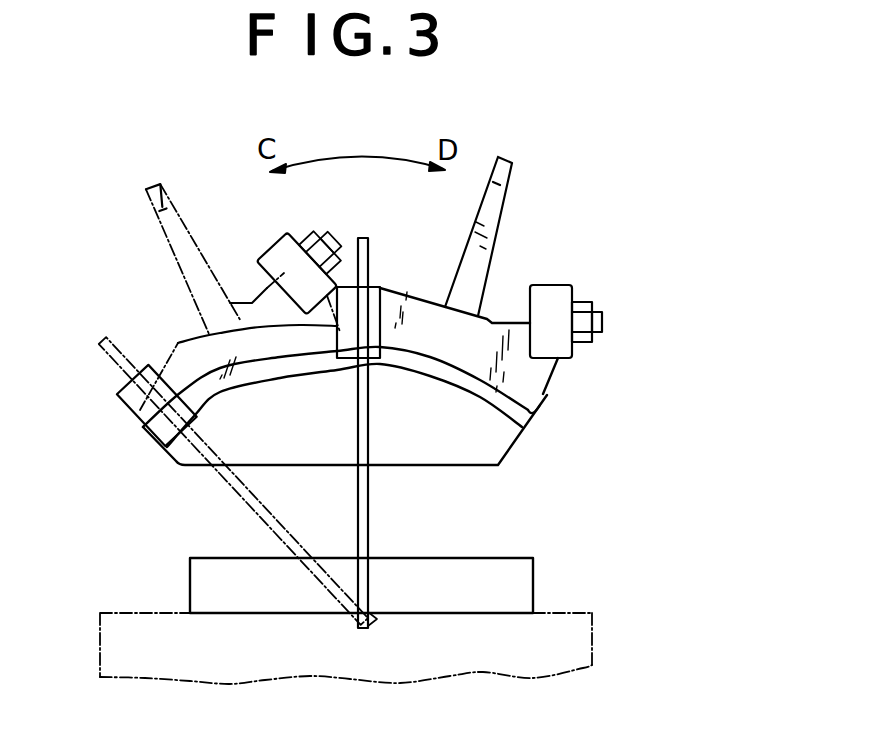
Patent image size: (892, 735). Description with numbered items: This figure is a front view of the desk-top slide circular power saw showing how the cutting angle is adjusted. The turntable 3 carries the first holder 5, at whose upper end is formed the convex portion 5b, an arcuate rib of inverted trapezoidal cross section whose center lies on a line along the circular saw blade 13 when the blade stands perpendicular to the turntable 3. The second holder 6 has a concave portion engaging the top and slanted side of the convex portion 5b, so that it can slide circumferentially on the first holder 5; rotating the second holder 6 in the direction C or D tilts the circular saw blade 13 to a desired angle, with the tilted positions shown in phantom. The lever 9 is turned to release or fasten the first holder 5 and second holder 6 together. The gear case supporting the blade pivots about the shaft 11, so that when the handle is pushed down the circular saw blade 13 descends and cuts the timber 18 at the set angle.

The turntable 3 is at (574, 640).
The first holder 5 is at (500, 452).
The convex portion 5b is at (535, 413).
The second holder 6 is at (502, 327).
The lever 9 is at (512, 164).
The shaft 11 is at (600, 318).
The circular saw blade 13 is at (368, 512).
The timber 18 is at (533, 582).